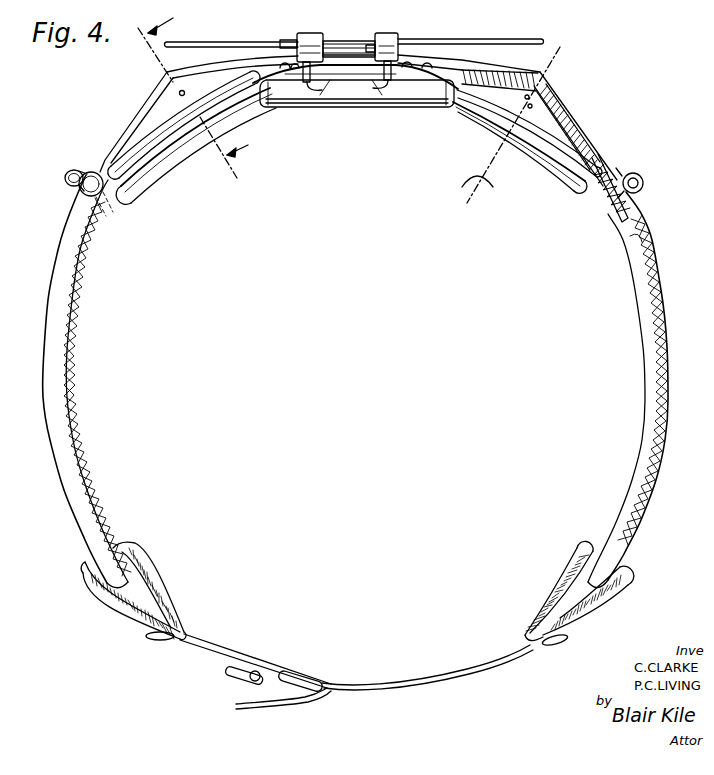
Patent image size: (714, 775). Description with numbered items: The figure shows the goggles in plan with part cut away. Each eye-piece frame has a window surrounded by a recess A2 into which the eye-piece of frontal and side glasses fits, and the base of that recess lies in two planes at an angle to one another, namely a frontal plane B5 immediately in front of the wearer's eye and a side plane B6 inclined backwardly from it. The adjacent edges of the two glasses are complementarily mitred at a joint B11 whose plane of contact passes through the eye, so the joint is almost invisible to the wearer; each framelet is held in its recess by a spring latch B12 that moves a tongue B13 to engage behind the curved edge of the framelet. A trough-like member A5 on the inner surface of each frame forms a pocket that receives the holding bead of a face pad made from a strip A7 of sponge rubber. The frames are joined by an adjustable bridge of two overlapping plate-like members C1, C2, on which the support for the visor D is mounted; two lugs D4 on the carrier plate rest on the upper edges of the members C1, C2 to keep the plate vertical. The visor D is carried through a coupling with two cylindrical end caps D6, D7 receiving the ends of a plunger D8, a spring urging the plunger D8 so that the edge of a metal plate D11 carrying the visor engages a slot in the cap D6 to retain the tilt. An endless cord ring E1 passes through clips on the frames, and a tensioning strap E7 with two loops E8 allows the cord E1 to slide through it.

The ring of stout cord E1 is at (68, 172).
The trough-like member A5 is at (152, 127).
The strip of resilient material A7 is at (143, 170).
The recess A2 is at (603, 162).
The frontal plane B5 is at (203, 70).
The side plane B6 is at (125, 130).
The mitred joint B11 is at (545, 77).
The spring latch B12 is at (595, 200).
The tongue B13 is at (593, 187).
The plate-like member C1 is at (365, 78).
The second plate-like member C2 is at (340, 76).
The visor D is at (428, 40).
The lugs D4 is at (303, 62).
The cylindrical end cap D6 is at (391, 34).
The cylindrical end cap D7 is at (311, 32).
The plunger D8 is at (350, 41).
The metal plate D11 is at (288, 41).
The tensioning strap E7 is at (368, 686).
The loops E8 is at (147, 577).